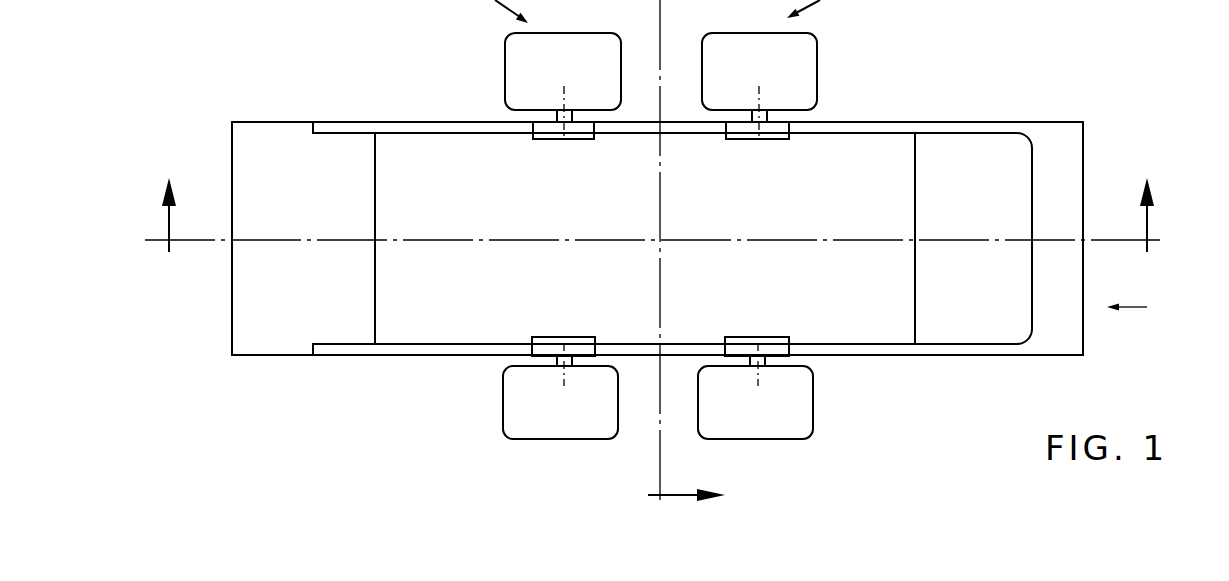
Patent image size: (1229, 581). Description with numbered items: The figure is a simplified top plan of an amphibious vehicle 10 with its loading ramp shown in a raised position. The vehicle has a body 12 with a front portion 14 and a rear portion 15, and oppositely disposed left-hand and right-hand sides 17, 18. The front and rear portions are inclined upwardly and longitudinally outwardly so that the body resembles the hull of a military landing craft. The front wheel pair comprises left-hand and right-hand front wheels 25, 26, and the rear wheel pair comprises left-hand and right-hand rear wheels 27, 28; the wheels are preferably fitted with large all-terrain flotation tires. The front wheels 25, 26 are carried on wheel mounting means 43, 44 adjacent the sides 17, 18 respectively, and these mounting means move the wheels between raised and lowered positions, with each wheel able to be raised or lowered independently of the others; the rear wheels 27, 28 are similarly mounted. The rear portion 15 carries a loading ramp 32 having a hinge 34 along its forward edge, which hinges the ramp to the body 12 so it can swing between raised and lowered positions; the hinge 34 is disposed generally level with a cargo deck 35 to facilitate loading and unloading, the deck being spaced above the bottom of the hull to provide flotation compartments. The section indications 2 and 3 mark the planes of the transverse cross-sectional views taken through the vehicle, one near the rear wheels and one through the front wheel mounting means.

The amphibious vehicle 10 is at (1089, 93).
The body 12 is at (427, 105).
The front portion 14 is at (1145, 307).
The rear portion 15 is at (291, 371).
The left-hand side 17 is at (853, 118).
The right-hand side 18 is at (900, 357).
The left-hand front wheel 25 is at (816, 43).
The right-hand front wheel 26 is at (808, 441).
The left-hand rear wheel 27 is at (555, 33).
The right-hand rear wheel 28 is at (510, 440).
The loading ramp 32 is at (290, 120).
The hinge 34 is at (376, 188).
The cargo deck 35 is at (534, 205).
The wheel mounting means 43 is at (772, 140).
The wheel mounting means 44 is at (785, 335).
The section line 2- 2 is at (657, 215).
The section line 3- 3 is at (686, 479).